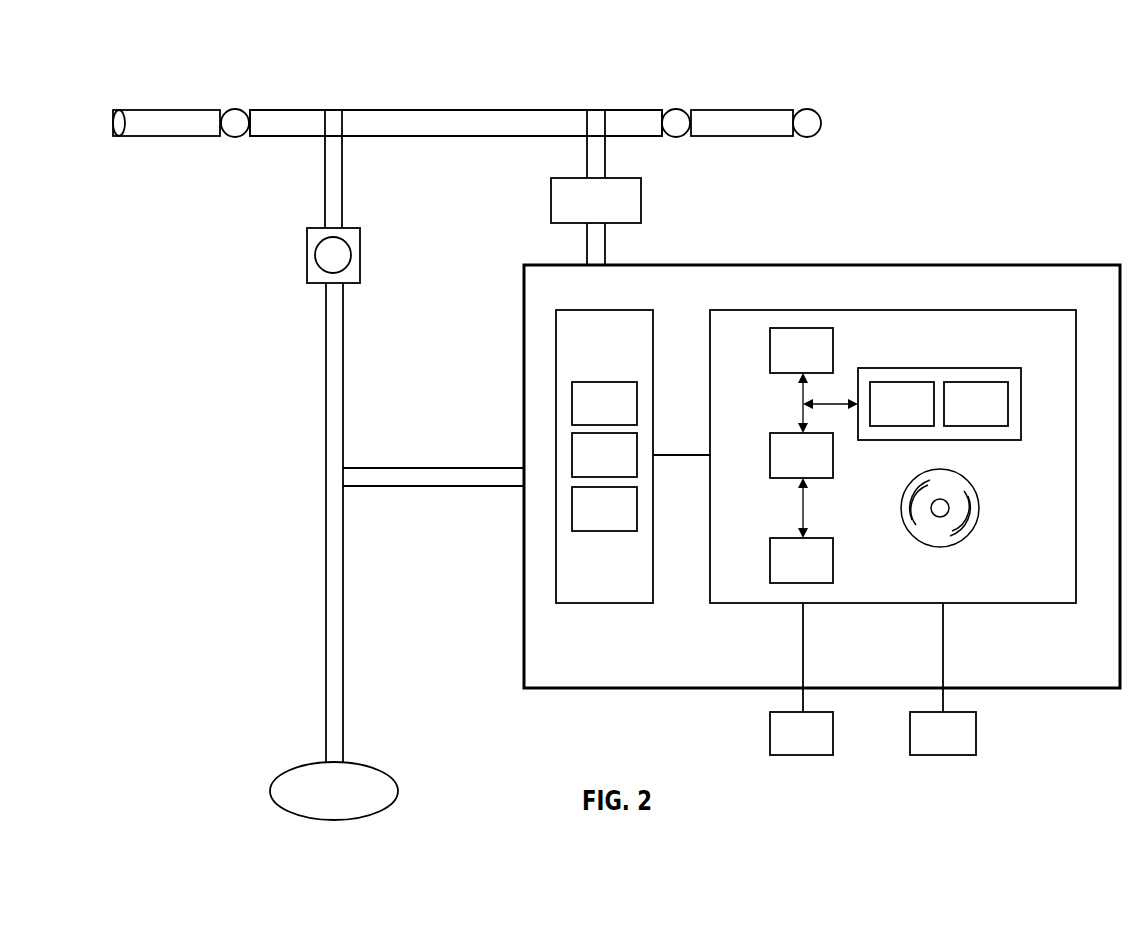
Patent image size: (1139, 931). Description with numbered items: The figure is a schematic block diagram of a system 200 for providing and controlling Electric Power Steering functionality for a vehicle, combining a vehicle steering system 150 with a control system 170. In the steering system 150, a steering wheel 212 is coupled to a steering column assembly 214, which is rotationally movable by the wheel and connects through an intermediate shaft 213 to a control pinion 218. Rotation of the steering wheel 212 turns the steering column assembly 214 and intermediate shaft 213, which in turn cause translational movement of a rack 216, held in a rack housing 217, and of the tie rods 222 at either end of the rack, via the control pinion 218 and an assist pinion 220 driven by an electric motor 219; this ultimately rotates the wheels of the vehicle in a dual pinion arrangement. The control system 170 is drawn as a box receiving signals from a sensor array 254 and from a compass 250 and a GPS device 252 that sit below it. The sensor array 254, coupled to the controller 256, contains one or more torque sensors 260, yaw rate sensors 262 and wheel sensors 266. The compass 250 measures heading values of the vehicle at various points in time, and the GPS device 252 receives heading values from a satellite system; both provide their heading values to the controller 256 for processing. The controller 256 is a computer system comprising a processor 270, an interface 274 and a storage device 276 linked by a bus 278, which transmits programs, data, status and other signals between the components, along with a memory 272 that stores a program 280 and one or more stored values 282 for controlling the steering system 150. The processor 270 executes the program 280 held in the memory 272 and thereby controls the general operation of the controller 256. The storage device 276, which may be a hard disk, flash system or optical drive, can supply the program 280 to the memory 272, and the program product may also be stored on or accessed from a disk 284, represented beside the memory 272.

The system 200 is at (1036, 141).
The steering system 150 is at (689, 163).
The tie rods 222 is at (182, 117).
The rack housing 217 is at (393, 108).
The rack 216 is at (488, 120).
The control pinion 218 is at (335, 120).
The intermediate shaft 213 is at (323, 197).
The steering column assembly 214 is at (325, 363).
The steering wheel 212 is at (318, 762).
The assist pinion 220 is at (595, 120).
The electric motor 219 is at (558, 203).
The control system 170 is at (980, 265).
The sensor array 254 is at (630, 315).
The torque sensors 260 is at (584, 417).
The yaw rate sensors 262 is at (584, 470).
The wheel sensors 266 is at (584, 524).
The controller 256 is at (977, 315).
The processor 270 is at (781, 366).
The interface 274 is at (781, 471).
The storage device 276 is at (781, 576).
The bus 278 is at (801, 410).
The memory 272 is at (955, 367).
The program 280 is at (882, 419).
The stored values 282 is at (956, 419).
The disk 284 is at (957, 480).
The compass 250 is at (781, 749).
The GPS device 252 is at (923, 749).